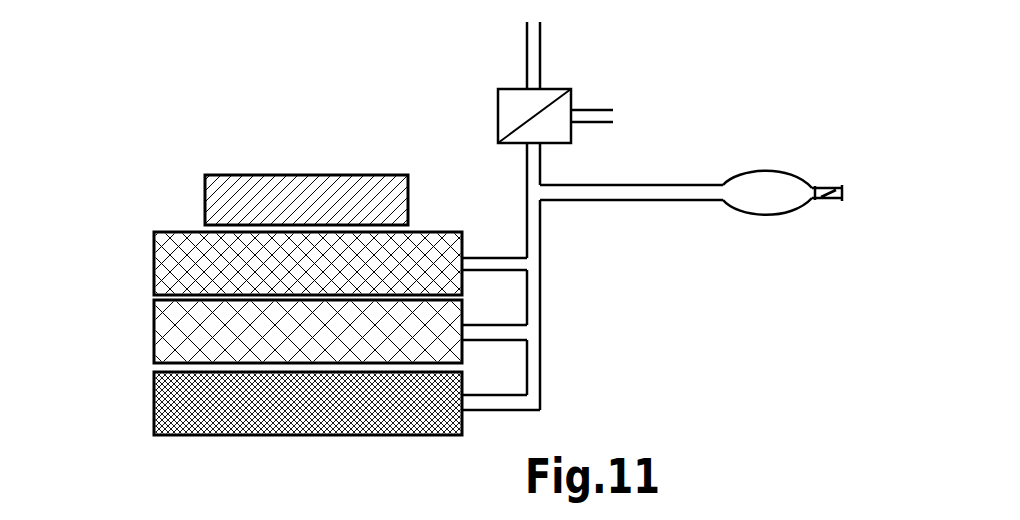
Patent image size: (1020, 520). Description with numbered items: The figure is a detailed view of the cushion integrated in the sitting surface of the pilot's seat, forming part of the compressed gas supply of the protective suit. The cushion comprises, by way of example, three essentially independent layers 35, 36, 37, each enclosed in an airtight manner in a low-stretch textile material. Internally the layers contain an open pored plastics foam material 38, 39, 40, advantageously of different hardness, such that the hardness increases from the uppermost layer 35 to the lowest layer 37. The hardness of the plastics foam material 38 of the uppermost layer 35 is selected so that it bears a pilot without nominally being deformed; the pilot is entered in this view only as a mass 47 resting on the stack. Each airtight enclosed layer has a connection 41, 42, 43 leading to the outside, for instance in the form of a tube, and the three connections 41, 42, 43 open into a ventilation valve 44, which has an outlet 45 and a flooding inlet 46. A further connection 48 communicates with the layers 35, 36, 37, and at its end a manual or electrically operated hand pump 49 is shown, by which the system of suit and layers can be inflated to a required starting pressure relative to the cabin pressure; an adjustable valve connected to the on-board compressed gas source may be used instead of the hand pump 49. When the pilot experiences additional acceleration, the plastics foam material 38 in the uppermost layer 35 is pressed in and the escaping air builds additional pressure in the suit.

The uppermost layer 35 is at (153, 243).
The middle layer 36 is at (153, 303).
The lowest layer 37 is at (153, 390).
The open pored plastics foam material 38 is at (188, 267).
The open pored plastics foam material 39 is at (207, 333).
The open pored plastics foam material 40 is at (187, 407).
The connection 41 is at (507, 265).
The connection 42 is at (507, 333).
The connection 43 is at (507, 402).
The ventilation valve 44 is at (555, 110).
The outlet 45 is at (537, 60).
The flooding inlet 46 is at (605, 118).
The mass 47 is at (248, 188).
The connection 48 is at (645, 193).
The hand pump 49 is at (777, 186).